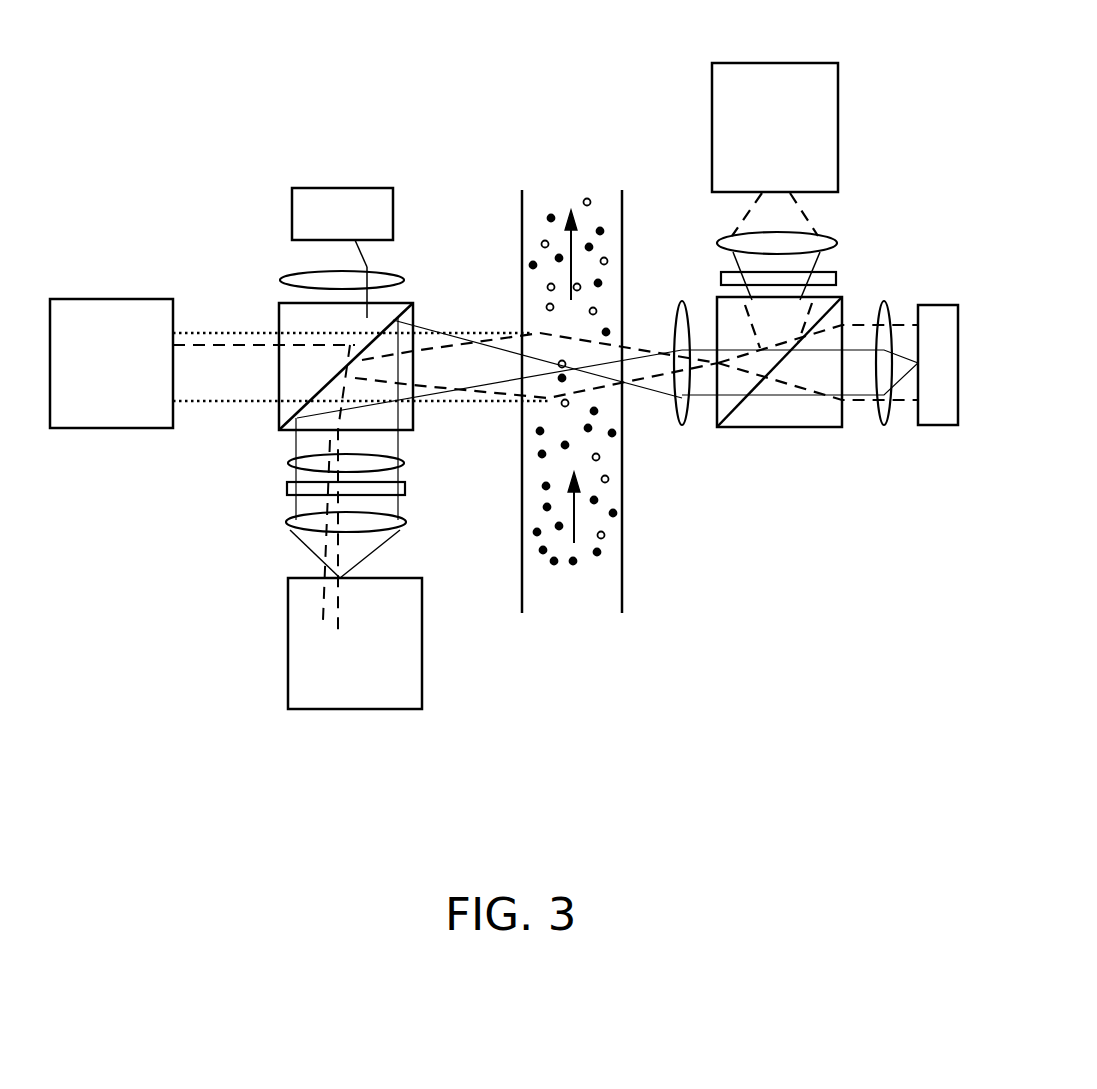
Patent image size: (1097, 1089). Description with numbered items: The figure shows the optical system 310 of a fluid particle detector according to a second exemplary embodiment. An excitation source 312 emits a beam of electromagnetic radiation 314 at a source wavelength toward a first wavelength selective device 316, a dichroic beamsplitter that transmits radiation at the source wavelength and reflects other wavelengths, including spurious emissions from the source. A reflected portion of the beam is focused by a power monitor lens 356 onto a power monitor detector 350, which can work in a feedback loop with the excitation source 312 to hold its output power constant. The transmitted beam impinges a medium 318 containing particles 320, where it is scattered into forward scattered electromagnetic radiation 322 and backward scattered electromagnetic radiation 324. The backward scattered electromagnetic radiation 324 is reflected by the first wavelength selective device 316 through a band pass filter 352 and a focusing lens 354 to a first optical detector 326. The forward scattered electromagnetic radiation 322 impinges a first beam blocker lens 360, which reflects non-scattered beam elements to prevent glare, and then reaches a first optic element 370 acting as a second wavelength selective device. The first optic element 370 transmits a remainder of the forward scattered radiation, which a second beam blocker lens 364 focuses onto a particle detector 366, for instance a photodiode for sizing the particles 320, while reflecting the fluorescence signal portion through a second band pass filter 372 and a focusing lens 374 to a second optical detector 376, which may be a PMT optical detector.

The optical system 310 is at (626, 110).
The excitation source 312 is at (123, 298).
The beam of electromagnetic radiation 314 is at (227, 307).
The first wavelength selective device 316 is at (398, 303).
The medium 318 is at (620, 242).
The particles 320 is at (608, 331).
The forward scattered electromagnetic radiation 322 is at (628, 343).
The backward scattered electromagnetic radiation 324 is at (468, 355).
The first optical detector 326 is at (288, 648).
The power monitor detector 350 is at (352, 187).
The band pass filter 352 is at (288, 488).
The focusing lens 354 is at (290, 523).
The power monitor lens 356 is at (295, 272).
The first beam blocker lens 360 is at (687, 428).
The second beam blocker lens 364 is at (880, 427).
The particle detector 366 is at (935, 425).
The first optic element 370 is at (768, 427).
The second band pass filter 372 is at (837, 278).
The focusing lens 374 is at (822, 257).
The second optical detector 376 is at (807, 63).